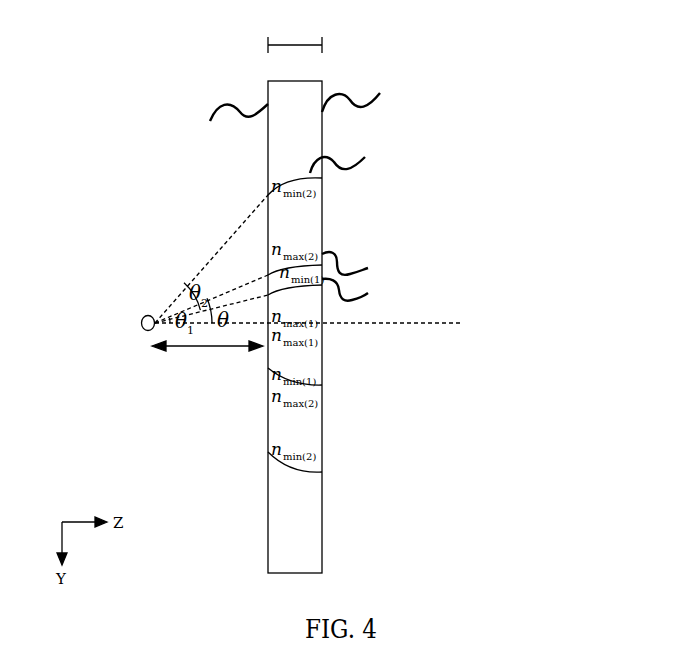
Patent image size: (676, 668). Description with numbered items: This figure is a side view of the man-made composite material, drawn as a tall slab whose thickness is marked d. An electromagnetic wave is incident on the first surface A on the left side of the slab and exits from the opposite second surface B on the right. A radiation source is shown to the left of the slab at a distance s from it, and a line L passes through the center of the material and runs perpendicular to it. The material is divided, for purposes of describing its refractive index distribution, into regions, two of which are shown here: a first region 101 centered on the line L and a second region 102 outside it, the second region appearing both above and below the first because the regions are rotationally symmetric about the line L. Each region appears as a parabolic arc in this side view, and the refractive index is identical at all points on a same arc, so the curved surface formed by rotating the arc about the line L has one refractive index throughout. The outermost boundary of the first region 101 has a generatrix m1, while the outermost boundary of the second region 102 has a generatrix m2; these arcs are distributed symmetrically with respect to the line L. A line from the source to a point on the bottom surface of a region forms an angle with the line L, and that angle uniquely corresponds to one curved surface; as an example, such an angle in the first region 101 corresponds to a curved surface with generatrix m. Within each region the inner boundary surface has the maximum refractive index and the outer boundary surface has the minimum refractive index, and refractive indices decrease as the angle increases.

The first region 101 is at (322, 260).
The second region 102 is at (350, 177).
The first surface A is at (229, 123).
The second surface B is at (363, 96).
The generatrix of a curved surface in the first region m is at (359, 290).
The generatrix of the outermost boundary curved surface of the first region m1 is at (362, 266).
The generatrix of the outermost boundary curved surface of the second region m2 is at (357, 160).
The line perpendicular to the man-made composite material L is at (330, 324).
The thickness of the man-made composite material d is at (295, 29).
The distance from the radiation source to the man-made composite material s is at (207, 358).